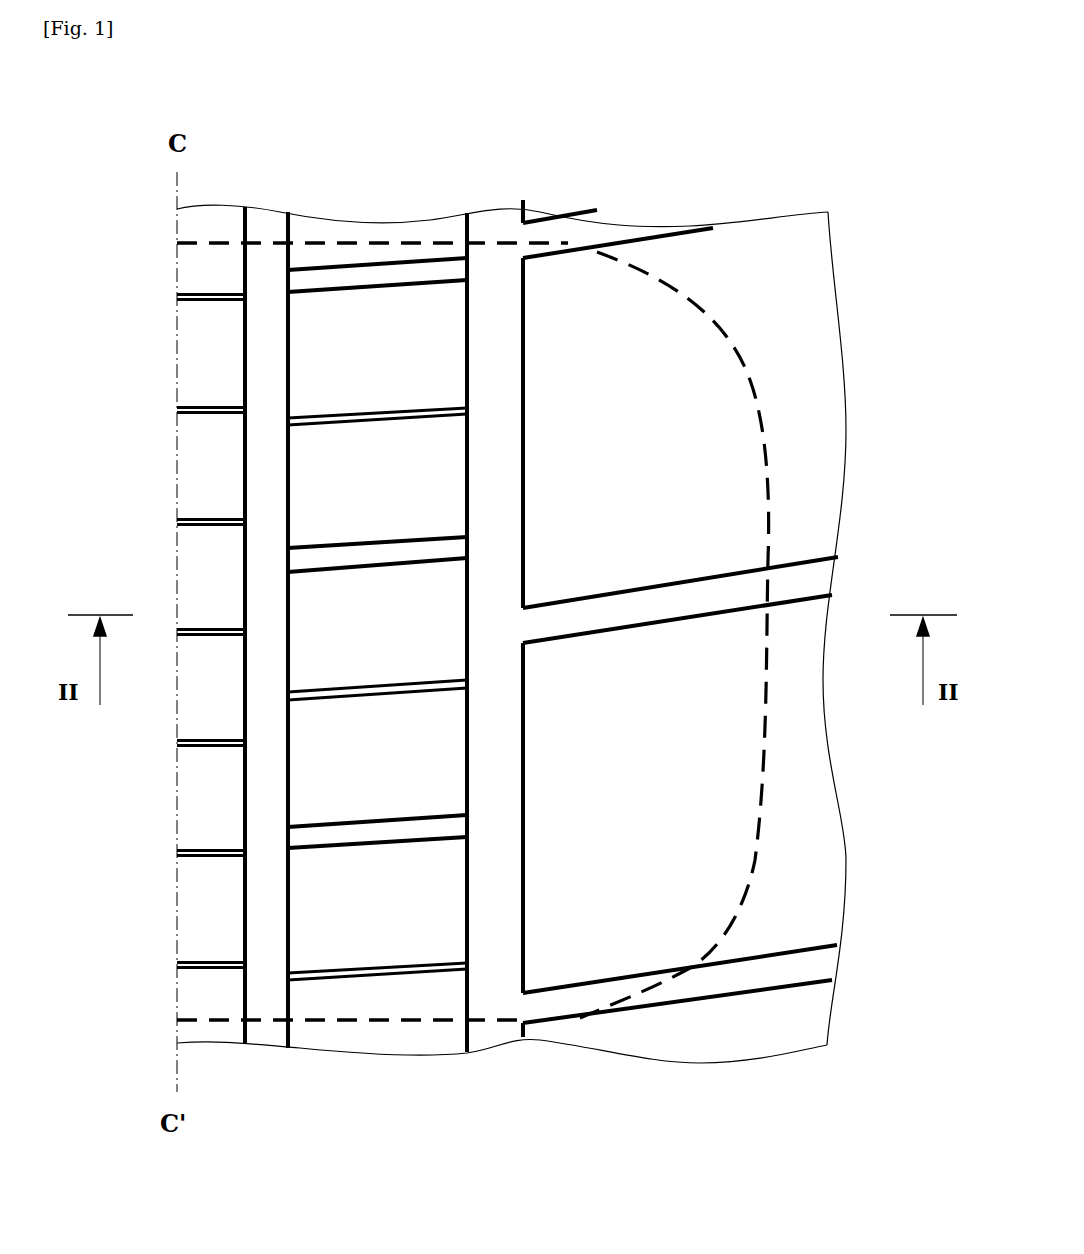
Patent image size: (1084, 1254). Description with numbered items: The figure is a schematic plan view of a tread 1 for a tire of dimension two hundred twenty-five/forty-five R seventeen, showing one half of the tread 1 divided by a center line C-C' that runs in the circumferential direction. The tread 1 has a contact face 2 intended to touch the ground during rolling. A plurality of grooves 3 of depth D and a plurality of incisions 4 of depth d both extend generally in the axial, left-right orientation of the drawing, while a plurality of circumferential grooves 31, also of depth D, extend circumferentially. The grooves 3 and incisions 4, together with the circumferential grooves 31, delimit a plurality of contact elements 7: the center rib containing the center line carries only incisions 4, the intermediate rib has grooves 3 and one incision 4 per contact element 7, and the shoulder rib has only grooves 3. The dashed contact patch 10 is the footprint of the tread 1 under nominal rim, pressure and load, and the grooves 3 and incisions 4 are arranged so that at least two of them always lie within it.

The tread 1 is at (613, 167).
The contact face 2 is at (208, 230).
The groove 3 is at (425, 555).
The incision 4 is at (193, 305).
The contact element 7 is at (188, 262).
The contact patch 10 is at (768, 735).
The circumferential groove 31 is at (262, 1003).